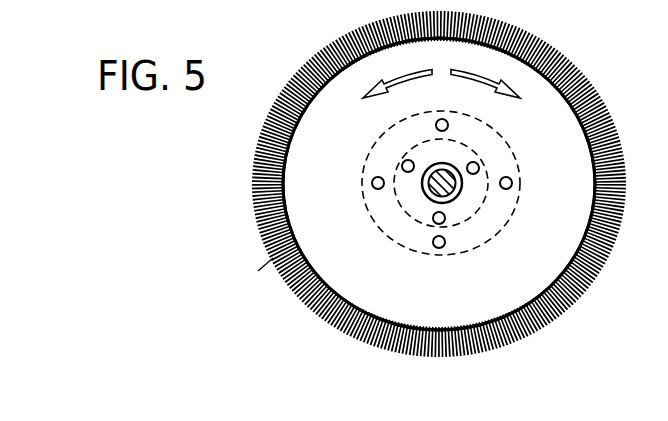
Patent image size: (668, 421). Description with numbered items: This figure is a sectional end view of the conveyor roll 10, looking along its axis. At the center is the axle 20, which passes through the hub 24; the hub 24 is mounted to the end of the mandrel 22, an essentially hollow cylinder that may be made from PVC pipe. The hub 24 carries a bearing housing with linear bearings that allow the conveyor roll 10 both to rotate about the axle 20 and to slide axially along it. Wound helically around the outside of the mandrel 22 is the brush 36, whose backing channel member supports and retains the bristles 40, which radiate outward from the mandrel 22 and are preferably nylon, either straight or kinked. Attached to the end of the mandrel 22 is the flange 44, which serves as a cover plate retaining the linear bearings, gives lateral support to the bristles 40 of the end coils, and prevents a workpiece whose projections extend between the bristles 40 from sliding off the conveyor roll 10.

The conveyor roll 10 is at (266, 134).
The axle 20 is at (422, 193).
The mandrel 22 is at (528, 193).
The hub 24 is at (483, 163).
The brush 36 is at (334, 48).
The bristles 40 is at (290, 283).
The flange 44 is at (292, 189).